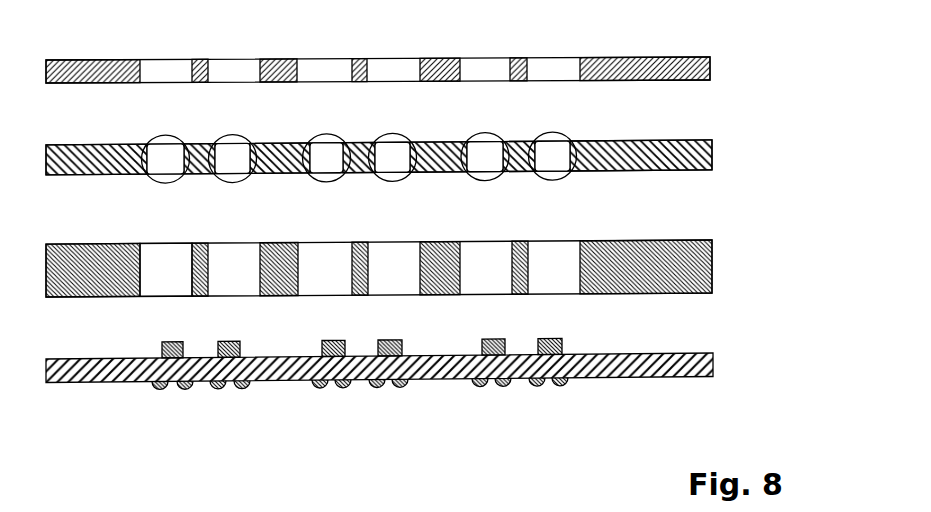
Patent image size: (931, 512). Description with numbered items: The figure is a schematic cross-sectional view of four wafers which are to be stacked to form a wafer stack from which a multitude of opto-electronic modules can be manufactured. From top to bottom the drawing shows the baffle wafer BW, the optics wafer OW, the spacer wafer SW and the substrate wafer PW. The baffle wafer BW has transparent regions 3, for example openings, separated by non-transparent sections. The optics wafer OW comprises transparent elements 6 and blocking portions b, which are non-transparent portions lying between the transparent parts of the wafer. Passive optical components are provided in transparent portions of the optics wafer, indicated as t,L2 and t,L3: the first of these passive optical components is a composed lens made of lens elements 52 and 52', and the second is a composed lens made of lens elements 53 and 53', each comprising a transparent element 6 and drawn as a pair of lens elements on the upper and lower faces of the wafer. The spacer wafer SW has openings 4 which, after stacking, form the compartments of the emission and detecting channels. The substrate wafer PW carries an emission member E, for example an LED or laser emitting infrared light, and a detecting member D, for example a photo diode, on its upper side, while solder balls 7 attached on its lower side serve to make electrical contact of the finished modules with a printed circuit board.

The transparent region 3 is at (557, 60).
The lens element 52 is at (321, 159).
The lens element 52' is at (148, 178).
The lens element 53 is at (568, 162).
The lens element 53' is at (568, 178).
The blocking portion b is at (361, 143).
The transparent element 6 is at (302, 166).
The opening 4 is at (158, 256).
The transparent portion with passive optical component L2 t,L2 is at (463, 187).
The transparent portion with passive optical component L3 t,L3 is at (539, 186).
The emission member E is at (482, 348).
The detecting member D is at (563, 345).
The solder ball 7 is at (562, 386).
The baffle wafer BW is at (426, 49).
The optics wafer OW is at (426, 161).
The spacer wafer SW is at (426, 246).
The substrate wafer PW is at (426, 370).